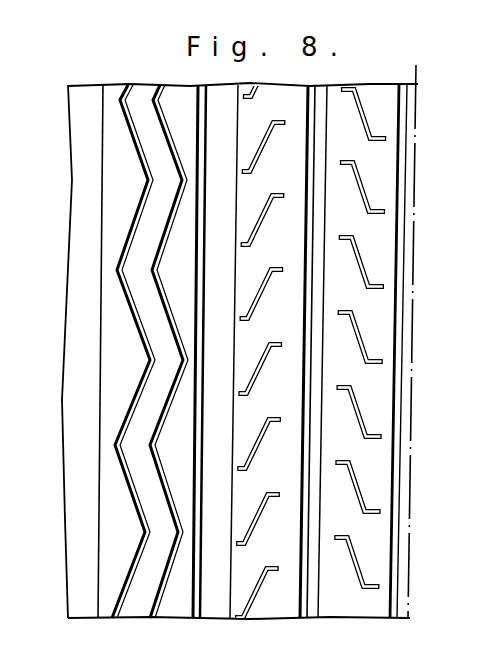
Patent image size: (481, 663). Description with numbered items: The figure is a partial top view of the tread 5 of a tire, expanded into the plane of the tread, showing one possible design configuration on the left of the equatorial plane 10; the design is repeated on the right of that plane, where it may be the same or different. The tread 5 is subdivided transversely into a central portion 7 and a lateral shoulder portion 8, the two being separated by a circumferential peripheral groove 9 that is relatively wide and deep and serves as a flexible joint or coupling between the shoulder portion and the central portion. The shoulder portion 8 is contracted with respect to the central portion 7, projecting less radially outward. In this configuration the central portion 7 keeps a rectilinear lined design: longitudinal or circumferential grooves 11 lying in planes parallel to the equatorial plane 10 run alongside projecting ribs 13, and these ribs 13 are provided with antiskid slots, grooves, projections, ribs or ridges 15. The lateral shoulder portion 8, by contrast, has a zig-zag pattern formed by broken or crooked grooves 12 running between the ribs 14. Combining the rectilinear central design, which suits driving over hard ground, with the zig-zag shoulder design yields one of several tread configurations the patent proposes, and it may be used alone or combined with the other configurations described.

The tread 5 is at (368, 399).
The central portion 7 is at (372, 265).
The lateral shoulder portion 8 is at (113, 378).
The circumferential peripheral groove 9 is at (203, 616).
The equatorial plane 10 is at (417, 72).
The circumferential groove 11 is at (408, 137).
The zig-zag groove 12 is at (148, 620).
The rib 13 is at (272, 613).
The rib 14 is at (152, 503).
The antiskid slot or ridge 15 is at (360, 250).